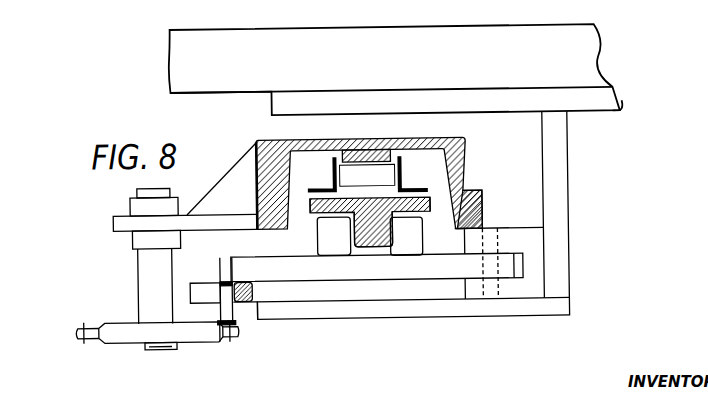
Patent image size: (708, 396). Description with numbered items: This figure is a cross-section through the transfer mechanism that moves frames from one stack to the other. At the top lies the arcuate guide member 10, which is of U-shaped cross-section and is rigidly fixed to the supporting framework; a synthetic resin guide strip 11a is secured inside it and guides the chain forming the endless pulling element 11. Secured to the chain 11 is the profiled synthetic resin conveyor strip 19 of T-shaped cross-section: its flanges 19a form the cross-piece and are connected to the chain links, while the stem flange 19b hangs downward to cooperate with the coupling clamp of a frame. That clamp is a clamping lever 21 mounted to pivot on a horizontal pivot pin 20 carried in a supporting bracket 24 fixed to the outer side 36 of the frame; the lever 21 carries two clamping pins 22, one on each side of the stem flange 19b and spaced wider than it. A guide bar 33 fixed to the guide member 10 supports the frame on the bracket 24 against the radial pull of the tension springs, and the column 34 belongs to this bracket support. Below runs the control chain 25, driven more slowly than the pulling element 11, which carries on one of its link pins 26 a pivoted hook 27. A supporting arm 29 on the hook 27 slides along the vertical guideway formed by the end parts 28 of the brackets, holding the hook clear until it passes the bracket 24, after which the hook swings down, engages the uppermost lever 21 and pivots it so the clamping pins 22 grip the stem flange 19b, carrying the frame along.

The top plate 36 is at (434, 34).
The arcuate guide member 10 is at (258, 141).
The endless pulling element 11 is at (365, 177).
The synthetic resin guide strip 11a is at (372, 156).
The conveyor strip 19 is at (374, 205).
The flanges 19a is at (326, 197).
The stem flange 19b is at (378, 238).
The clamping pins 22 is at (320, 236).
The clamping lever 21 is at (439, 273).
The pivot pin 20 is at (497, 287).
The supporting bracket 24 is at (559, 281).
The guide bar 33 is at (483, 202).
The upright column 34 is at (545, 231).
The link pin 26 is at (222, 281).
The pivoted hook 27 is at (197, 291).
The end parts 28 is at (253, 319).
The supporting arm 29 is at (249, 299).
The endless chain 25 is at (227, 339).